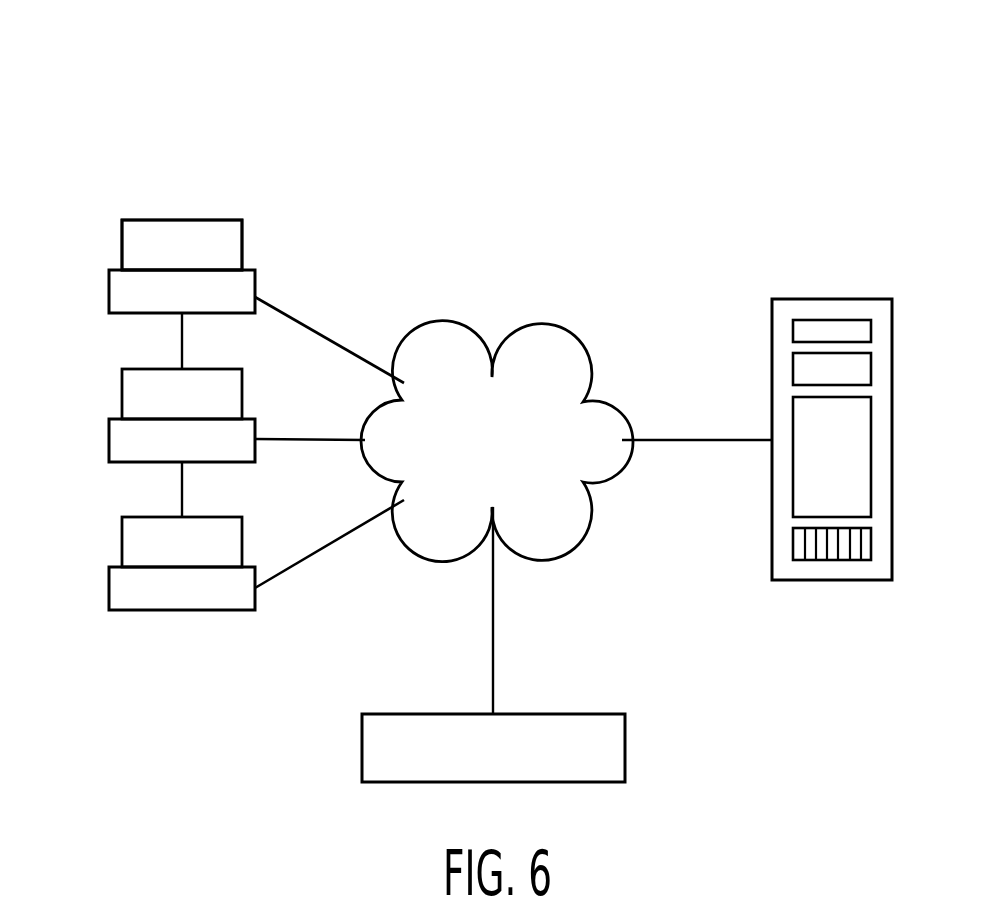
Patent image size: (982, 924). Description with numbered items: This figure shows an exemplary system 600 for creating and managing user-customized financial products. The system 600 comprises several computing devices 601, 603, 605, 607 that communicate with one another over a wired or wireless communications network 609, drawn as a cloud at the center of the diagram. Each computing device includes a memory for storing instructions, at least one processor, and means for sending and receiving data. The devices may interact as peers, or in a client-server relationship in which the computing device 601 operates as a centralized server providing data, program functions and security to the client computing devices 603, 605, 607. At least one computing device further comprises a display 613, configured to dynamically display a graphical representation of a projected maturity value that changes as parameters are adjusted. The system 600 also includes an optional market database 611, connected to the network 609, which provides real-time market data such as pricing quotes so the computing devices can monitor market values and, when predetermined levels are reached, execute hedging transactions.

The system 600 is at (767, 59).
The computing device 601 is at (838, 299).
The computing device 603 is at (109, 283).
The computing device 605 is at (108, 443).
The computing device 607 is at (125, 610).
The communications network 609 is at (541, 358).
The market database 611 is at (362, 743).
The display 613 is at (242, 230).